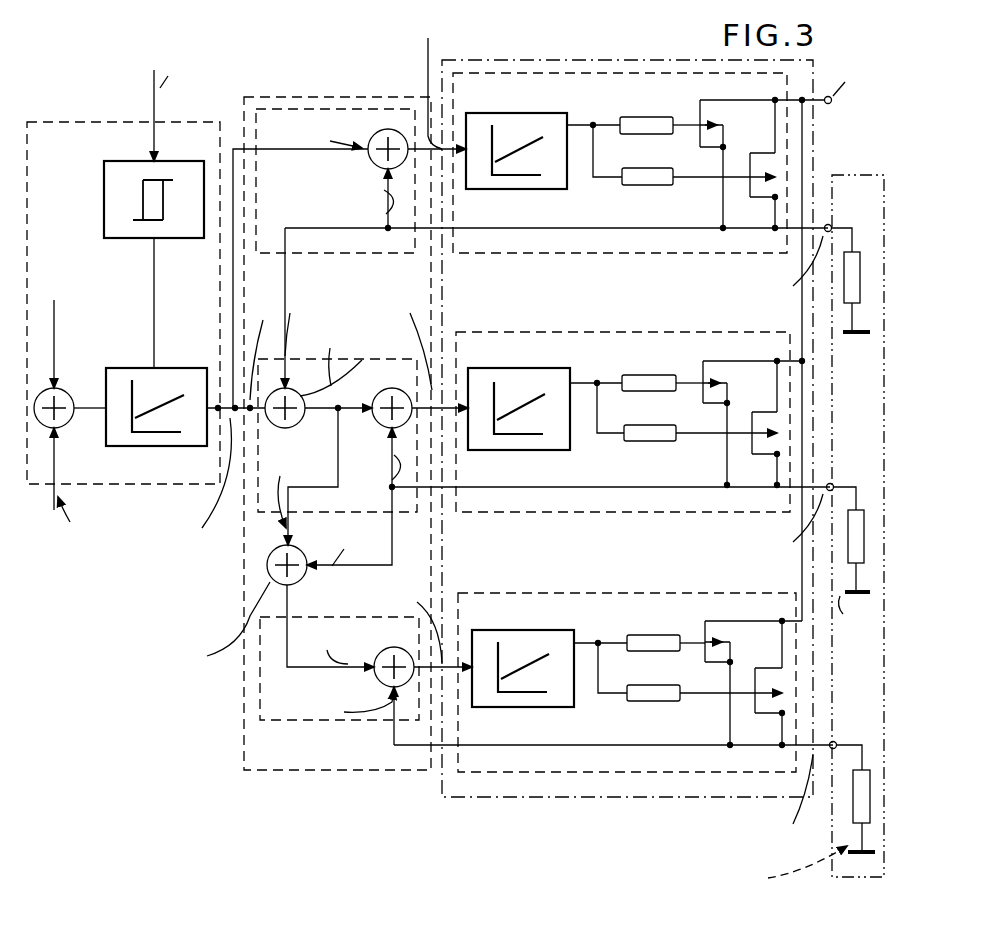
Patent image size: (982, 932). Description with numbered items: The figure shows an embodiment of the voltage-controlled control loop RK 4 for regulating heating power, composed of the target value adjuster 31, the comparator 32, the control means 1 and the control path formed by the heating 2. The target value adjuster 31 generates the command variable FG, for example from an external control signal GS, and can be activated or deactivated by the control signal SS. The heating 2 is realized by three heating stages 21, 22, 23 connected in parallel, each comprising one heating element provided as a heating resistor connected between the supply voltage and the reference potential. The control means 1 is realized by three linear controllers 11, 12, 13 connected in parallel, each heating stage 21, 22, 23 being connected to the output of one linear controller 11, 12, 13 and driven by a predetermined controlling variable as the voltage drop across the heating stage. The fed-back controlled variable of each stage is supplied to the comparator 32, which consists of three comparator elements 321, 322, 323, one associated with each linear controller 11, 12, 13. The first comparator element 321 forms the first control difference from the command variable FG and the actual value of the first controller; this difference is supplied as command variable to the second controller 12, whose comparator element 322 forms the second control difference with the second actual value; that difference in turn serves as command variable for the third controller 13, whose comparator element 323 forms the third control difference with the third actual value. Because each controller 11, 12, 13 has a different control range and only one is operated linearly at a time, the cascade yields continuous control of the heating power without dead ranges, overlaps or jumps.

The control means 1 is at (538, 798).
The control path (heating) 2 is at (840, 175).
The control loop RK 4 is at (355, 830).
The first linear controller 11 is at (537, 254).
The second linear controller 12 is at (657, 332).
The third linear controller 13 is at (657, 592).
The first heating stage 21 is at (852, 338).
The second heating stage 22 is at (860, 508).
The third heating stage 23 is at (863, 768).
The target value adjuster 31 is at (70, 120).
The comparator 32 is at (320, 97).
The first comparator element 321 is at (268, 96).
The second comparator element 322 is at (261, 508).
The third comparator element 323 is at (258, 726).